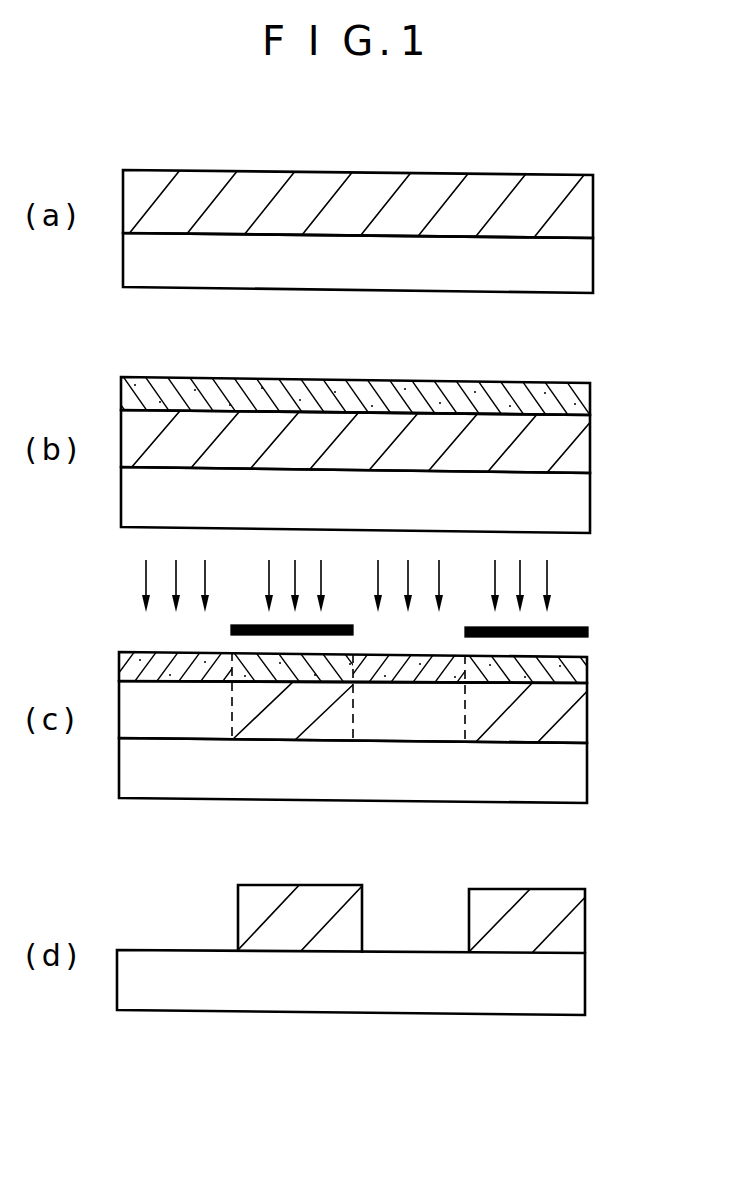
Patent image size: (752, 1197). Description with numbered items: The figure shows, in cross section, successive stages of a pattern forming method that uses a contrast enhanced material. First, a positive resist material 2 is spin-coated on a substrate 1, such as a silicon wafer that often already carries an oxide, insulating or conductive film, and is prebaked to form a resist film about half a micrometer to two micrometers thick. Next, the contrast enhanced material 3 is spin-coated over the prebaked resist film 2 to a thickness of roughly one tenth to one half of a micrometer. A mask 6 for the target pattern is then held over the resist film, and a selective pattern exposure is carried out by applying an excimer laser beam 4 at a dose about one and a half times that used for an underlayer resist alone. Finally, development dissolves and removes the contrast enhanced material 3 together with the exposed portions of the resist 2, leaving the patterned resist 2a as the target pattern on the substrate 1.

The substrate 1 is at (585, 265).
The positive resist material 2 is at (585, 213).
The patterned layer 2a is at (575, 928).
The contrast enhanced material 3 is at (588, 403).
The excimer laser beam 4 is at (555, 592).
The mask 6 is at (588, 632).